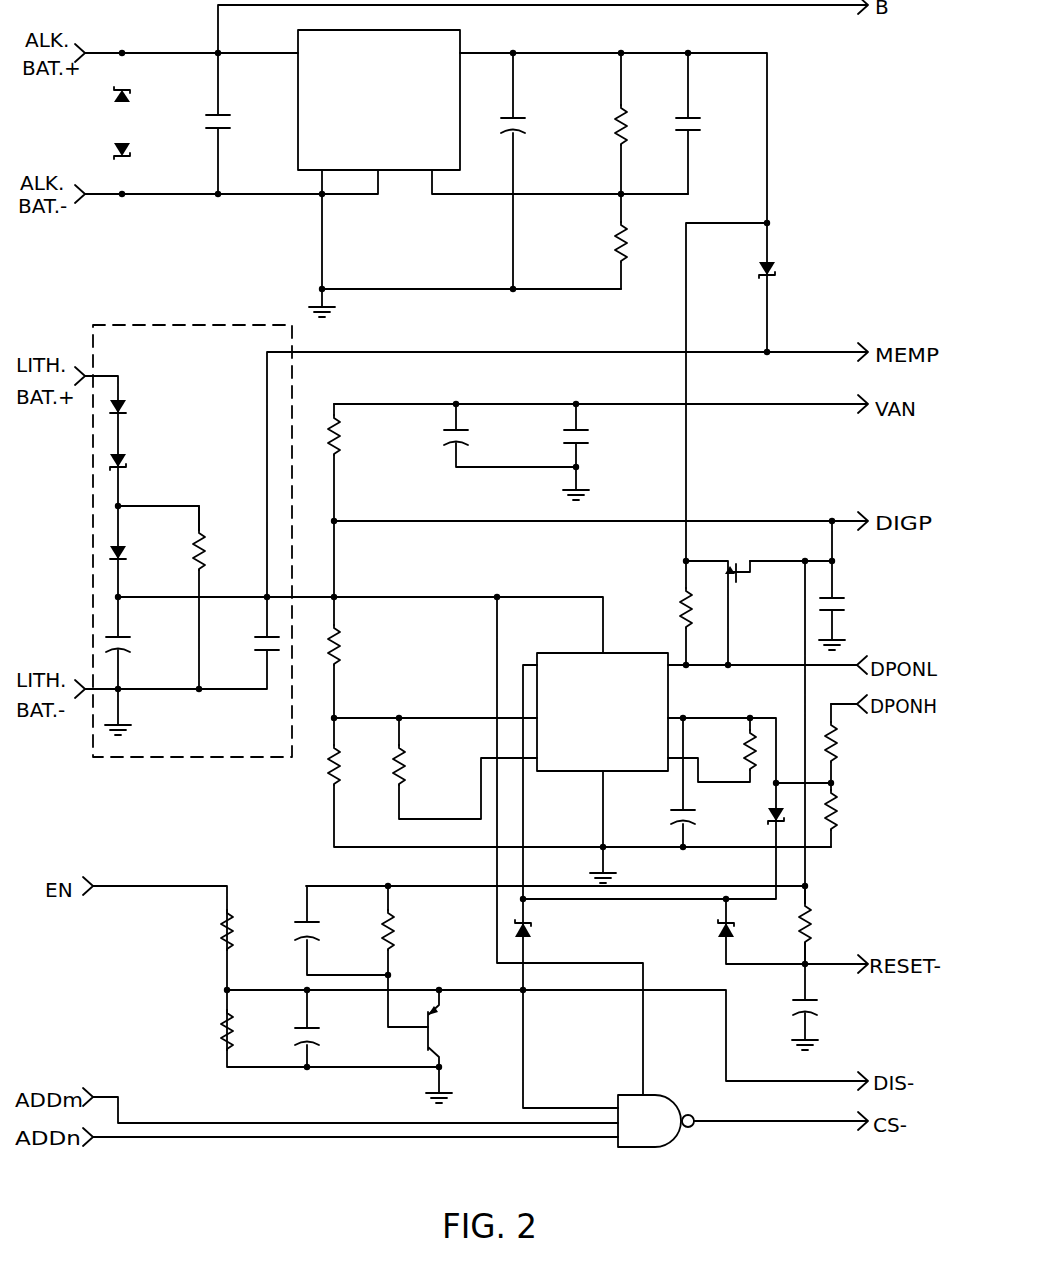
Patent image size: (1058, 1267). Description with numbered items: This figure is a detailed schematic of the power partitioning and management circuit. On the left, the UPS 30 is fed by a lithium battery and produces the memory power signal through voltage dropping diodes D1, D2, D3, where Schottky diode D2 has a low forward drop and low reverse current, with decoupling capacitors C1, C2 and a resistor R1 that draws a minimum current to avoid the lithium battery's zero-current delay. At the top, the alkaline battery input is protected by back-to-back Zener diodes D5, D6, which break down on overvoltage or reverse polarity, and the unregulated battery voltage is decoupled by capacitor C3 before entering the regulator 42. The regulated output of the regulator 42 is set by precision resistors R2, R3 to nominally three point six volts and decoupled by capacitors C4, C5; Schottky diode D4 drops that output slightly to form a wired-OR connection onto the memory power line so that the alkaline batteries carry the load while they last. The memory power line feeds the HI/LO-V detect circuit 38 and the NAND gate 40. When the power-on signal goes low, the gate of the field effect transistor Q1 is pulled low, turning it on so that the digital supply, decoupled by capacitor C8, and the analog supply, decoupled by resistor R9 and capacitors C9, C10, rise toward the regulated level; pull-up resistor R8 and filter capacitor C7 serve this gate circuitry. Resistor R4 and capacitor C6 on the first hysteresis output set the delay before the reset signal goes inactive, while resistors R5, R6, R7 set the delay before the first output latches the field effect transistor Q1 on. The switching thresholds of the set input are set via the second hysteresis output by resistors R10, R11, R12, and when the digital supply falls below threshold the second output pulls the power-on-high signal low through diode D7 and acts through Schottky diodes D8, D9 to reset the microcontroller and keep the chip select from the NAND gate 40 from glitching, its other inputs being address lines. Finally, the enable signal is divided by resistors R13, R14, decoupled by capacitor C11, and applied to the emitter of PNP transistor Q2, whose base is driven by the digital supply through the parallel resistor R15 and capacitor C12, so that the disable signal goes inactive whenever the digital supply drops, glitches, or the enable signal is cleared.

The UPS 30 is at (196, 325).
The HI/LO-V detect circuit 38 is at (557, 653).
The NAND gate 40 is at (681, 1142).
The regulator 42 is at (443, 30).
The diode D1 is at (127, 416).
The Schottky diode D2 is at (127, 469).
The diode D3 is at (127, 561).
The Schottky diode D4 is at (777, 280).
The Zener diode D5 is at (131, 94).
The Zener diode D6 is at (131, 158).
The diode D7 is at (771, 823).
The Schottky diode D8 is at (736, 928).
The Schottky diode D9 is at (533, 928).
The decoupling capacitor C1 is at (129, 640).
The decoupling capacitor C2 is at (257, 642).
The capacitor C3 is at (225, 116).
The decoupling capacitor C4 is at (525, 118).
The decoupling capacitor C5 is at (695, 118).
The capacitor C6 is at (818, 1002).
The filter capacitor C7 is at (671, 824).
The capacitor C8 is at (845, 598).
The capacitor C9 is at (467, 432).
The capacitor C10 is at (587, 432).
The capacitor C11 is at (313, 1030).
The capacitor C12 is at (313, 930).
The resistor R1 is at (205, 561).
The precision resistor R2 is at (615, 135).
The precision resistor R3 is at (615, 252).
The resistor R4 is at (812, 925).
The resistor R5 is at (836, 750).
The resistor R6 is at (838, 822).
The resistor R7 is at (750, 752).
The pull-up resistor R8 is at (680, 603).
The resistor R9 is at (341, 451).
The resistor R10 is at (341, 662).
The resistor R11 is at (341, 775).
The resistor R12 is at (406, 775).
The resistor R13 is at (222, 926).
The resistor R14 is at (222, 1026).
The resistor R15 is at (394, 945).
The field effect transistor Q1 is at (741, 547).
The PNP transistor Q2 is at (436, 1051).